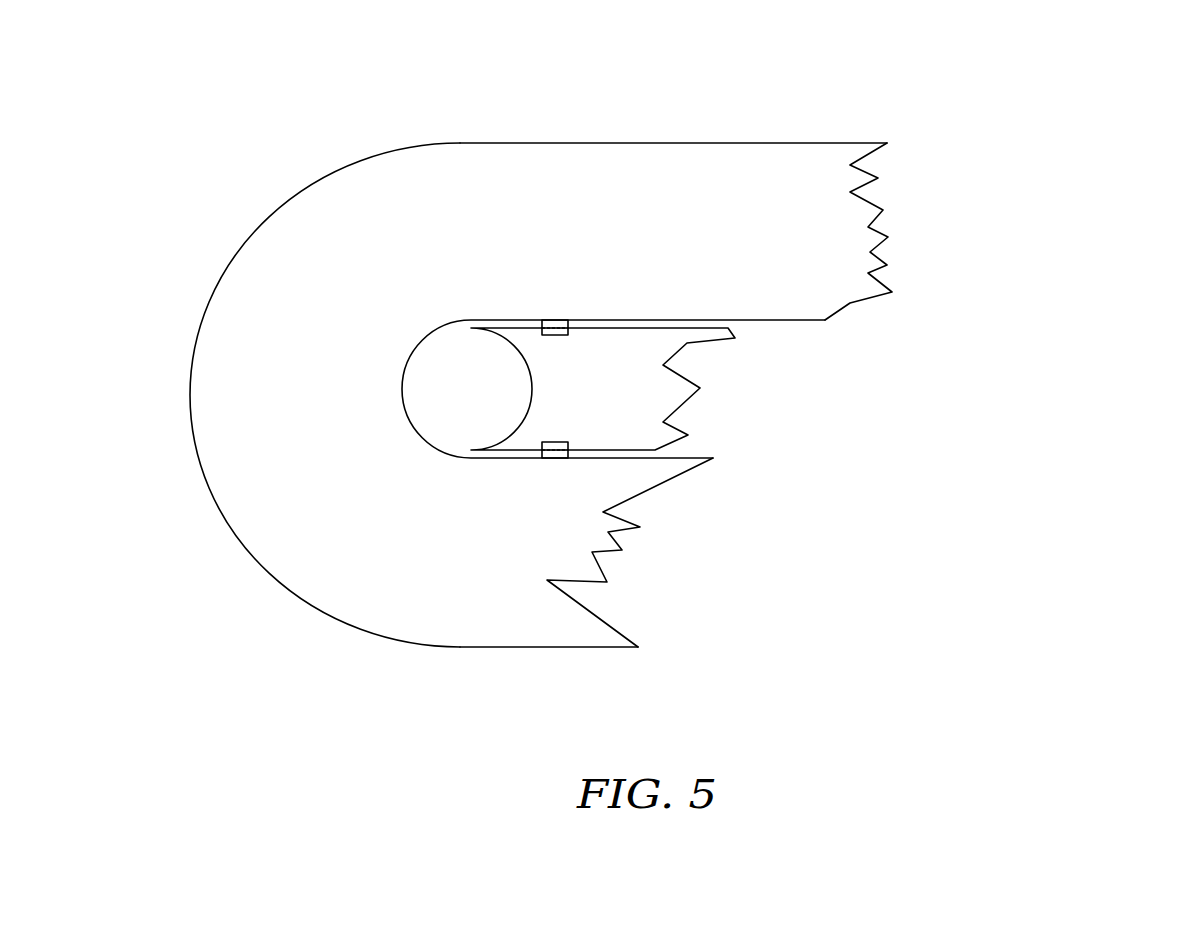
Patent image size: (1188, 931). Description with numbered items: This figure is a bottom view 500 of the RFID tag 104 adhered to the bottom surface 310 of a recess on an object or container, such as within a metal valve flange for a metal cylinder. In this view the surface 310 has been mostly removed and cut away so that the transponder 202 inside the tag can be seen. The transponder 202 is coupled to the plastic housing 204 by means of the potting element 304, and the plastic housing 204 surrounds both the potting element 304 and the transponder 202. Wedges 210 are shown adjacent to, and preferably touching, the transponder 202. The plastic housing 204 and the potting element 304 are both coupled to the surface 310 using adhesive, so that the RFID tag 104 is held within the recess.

The bottom view 500 is at (1037, 82).
The RFID tag 104 is at (312, 605).
The plastic housing 204 is at (877, 227).
The potting element 304 is at (508, 323).
The transponder 202 is at (558, 395).
The bottom surface 310 is at (943, 591).
The wedges 210 is at (550, 325).